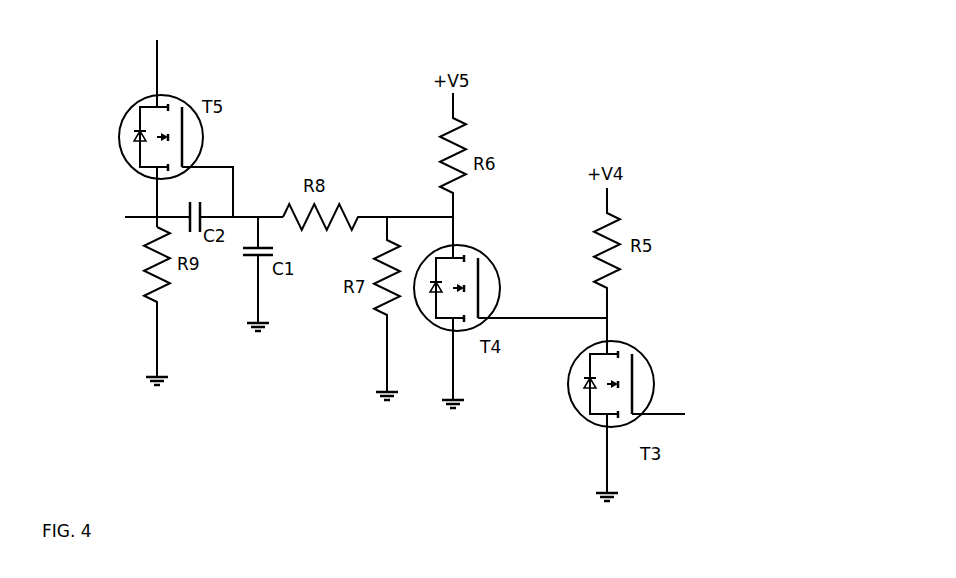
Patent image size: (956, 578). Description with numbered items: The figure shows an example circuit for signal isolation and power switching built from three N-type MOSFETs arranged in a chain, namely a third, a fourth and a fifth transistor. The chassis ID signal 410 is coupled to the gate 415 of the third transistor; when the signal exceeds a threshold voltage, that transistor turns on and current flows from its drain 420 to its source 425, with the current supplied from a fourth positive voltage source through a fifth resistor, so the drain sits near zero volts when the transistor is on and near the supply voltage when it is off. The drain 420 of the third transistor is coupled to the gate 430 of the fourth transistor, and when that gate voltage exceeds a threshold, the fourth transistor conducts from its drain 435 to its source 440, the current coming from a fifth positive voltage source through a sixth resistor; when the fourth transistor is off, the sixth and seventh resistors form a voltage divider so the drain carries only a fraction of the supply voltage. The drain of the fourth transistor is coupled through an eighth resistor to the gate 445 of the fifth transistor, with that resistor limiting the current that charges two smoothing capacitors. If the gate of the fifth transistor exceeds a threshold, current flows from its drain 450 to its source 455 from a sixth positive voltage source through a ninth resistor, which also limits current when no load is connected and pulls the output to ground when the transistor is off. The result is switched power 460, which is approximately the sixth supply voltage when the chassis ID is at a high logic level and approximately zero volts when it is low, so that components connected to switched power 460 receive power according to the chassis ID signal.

The chassis ID signal 410 is at (803, 398).
The gate of transistor T3 415 is at (687, 400).
The drain of transistor T3 420 is at (612, 322).
The source of transistor T3 425 is at (588, 457).
The gate of transistor T4 430 is at (537, 308).
The drain of transistor T4 435 is at (460, 225).
The source of transistor T4 440 is at (440, 352).
The gate of transistor T5 445 is at (237, 165).
The drain of transistor T5 450 is at (167, 88).
The source of transistor T5 455 is at (120, 192).
The switched power 460 is at (78, 287).